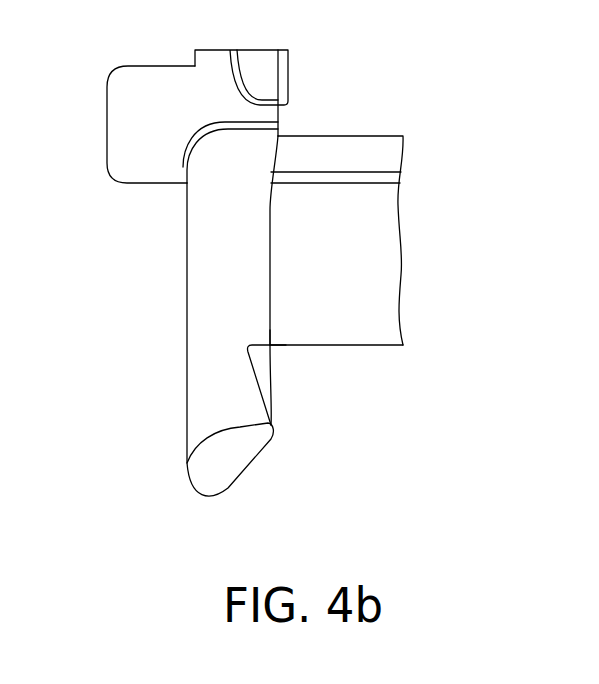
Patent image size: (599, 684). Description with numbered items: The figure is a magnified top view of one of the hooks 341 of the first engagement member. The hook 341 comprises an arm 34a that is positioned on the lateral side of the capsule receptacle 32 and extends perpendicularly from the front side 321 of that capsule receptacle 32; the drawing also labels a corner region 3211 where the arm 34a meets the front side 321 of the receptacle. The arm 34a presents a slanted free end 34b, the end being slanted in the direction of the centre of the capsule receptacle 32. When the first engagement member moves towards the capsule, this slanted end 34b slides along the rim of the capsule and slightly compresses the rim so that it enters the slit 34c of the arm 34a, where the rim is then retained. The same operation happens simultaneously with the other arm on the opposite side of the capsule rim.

The capsule receptacle 32 is at (378, 235).
The front side 321 is at (385, 347).
The corner of housing block 3211 is at (270, 345).
The hook 341 is at (161, 314).
The arm 34a is at (202, 260).
The slanted free end 34b is at (213, 480).
The slit 34c is at (258, 368).